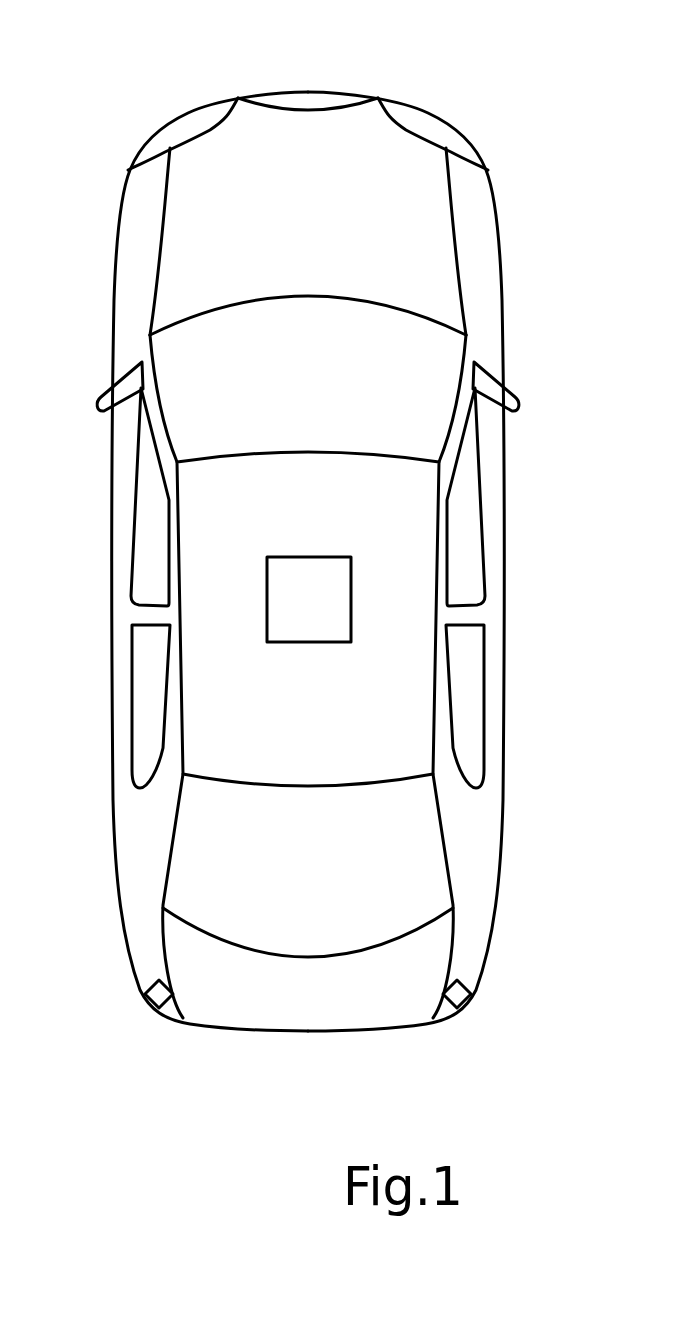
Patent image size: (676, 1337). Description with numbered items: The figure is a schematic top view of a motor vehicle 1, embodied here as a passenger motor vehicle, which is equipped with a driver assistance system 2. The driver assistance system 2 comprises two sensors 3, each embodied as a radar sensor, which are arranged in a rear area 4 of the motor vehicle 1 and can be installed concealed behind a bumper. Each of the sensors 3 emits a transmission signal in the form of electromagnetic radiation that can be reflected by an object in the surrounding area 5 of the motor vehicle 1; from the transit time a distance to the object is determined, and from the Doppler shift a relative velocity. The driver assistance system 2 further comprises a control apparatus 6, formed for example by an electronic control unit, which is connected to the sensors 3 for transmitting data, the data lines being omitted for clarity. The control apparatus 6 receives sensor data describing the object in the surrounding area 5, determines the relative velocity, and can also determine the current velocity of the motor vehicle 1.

The motor vehicle 1 is at (273, 92).
The driver assistance system 2 is at (393, 528).
The sensor 3 is at (152, 1002).
The rear area 4 is at (277, 1045).
The surrounding area 5 is at (302, 46).
The control apparatus 6 is at (337, 622).